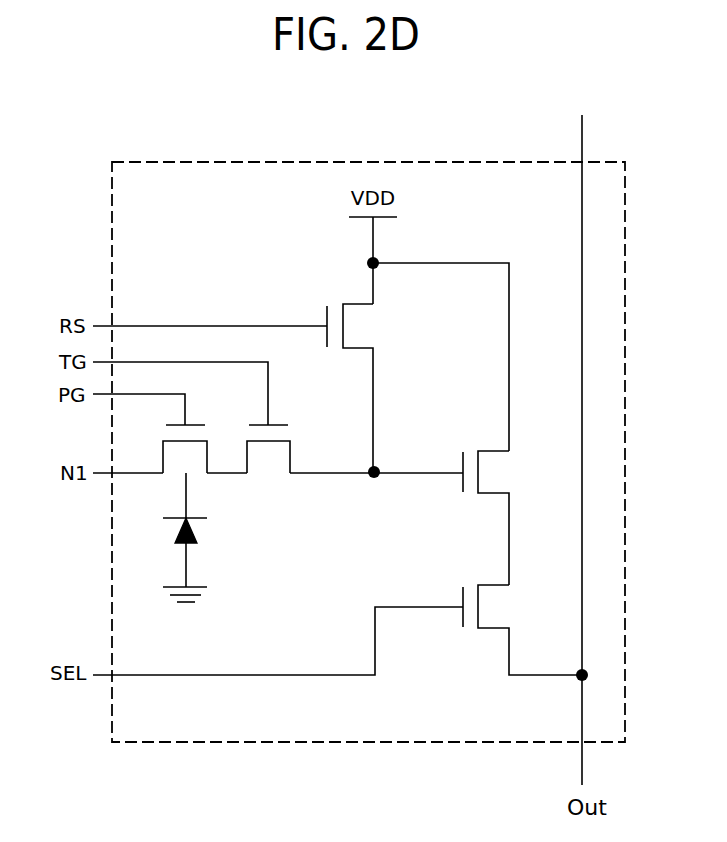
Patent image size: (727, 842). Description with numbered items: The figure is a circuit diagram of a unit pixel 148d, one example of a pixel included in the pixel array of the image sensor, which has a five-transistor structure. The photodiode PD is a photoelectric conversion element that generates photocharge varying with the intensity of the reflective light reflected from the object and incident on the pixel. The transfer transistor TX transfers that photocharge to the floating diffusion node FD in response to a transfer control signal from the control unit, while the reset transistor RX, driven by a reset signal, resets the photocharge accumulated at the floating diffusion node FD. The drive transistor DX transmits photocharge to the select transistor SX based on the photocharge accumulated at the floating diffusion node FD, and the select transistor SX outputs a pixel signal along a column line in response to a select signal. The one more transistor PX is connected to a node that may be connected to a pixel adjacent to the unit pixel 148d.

The unit pixel 148d is at (336, 146).
The reset transistor RX is at (362, 388).
The one more transistor PX is at (185, 459).
The transfer transistor TX is at (268, 459).
The floating diffusion node FD is at (389, 457).
The photodiode PD is at (201, 537).
The drive transistor DX is at (503, 518).
The select transistor SX is at (522, 630).